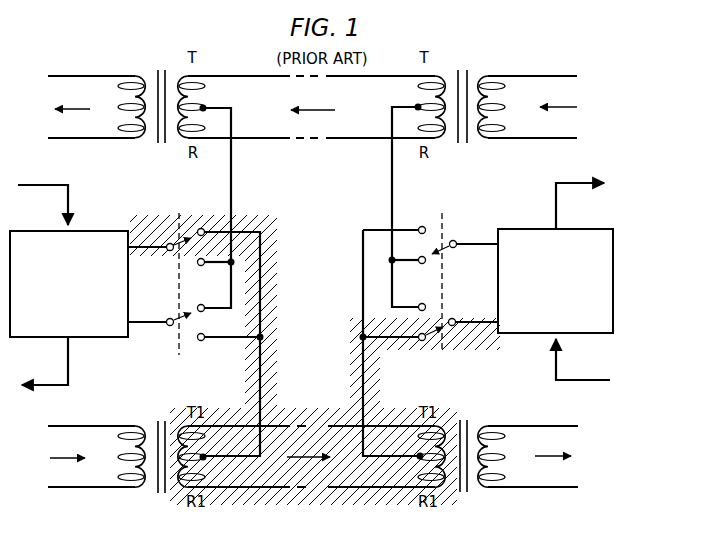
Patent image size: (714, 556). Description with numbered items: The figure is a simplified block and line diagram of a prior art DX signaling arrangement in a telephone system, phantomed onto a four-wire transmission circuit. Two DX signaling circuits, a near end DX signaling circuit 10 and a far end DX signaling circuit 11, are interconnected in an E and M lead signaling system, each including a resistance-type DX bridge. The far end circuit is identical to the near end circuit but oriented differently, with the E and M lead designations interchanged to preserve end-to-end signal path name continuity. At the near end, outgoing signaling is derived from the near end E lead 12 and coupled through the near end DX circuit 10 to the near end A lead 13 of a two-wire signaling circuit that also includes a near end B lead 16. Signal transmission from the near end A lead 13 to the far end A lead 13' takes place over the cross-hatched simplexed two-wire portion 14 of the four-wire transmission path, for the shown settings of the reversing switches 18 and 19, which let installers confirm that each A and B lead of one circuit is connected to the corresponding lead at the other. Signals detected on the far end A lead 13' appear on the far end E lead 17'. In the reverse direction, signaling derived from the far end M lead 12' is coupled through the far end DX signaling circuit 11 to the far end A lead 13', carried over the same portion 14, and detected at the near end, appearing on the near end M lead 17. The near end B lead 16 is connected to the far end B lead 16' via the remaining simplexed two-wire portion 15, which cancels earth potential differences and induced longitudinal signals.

The near end DX signaling circuit 10 is at (29, 231).
The far end DX signaling circuit 11 is at (595, 229).
The near end E lead 12 is at (59, 194).
The far end M lead 12' is at (568, 375).
The near end A lead 13 is at (151, 260).
The far end A lead 13' is at (474, 335).
The simplexed two-wire portion 14 is at (316, 476).
The remaining simplexed two-wire portion 15 is at (251, 78).
The near end B lead 16 is at (151, 336).
The far end B lead 16' is at (474, 253).
The near end M lead 17 is at (57, 373).
The far end E lead 17' is at (561, 195).
The reversing switch 18 is at (179, 230).
The reversing switch 19 is at (444, 230).